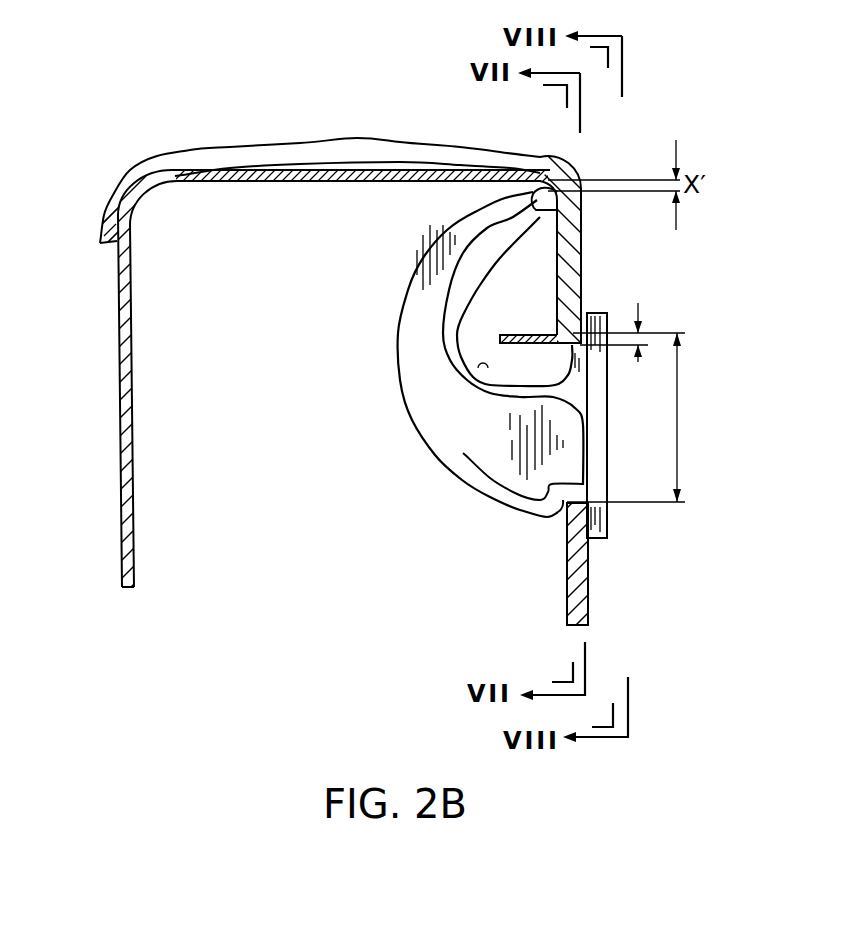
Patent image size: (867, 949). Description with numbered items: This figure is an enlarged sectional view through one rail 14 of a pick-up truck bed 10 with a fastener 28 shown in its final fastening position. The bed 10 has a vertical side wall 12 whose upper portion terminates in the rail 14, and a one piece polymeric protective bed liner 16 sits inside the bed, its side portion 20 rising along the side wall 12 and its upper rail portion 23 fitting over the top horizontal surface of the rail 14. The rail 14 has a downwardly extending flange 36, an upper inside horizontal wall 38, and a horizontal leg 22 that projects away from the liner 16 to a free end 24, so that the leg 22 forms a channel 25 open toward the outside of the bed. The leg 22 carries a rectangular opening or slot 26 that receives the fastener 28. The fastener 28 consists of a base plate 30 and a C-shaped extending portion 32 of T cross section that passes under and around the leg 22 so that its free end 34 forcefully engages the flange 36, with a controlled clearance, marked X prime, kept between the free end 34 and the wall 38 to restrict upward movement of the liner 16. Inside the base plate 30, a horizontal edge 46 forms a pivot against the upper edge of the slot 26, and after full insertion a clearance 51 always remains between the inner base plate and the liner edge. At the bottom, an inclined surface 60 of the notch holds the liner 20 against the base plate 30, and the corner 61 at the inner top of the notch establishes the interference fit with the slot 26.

The bed 10 is at (323, 387).
The side walls 12 is at (119, 535).
The rail 14 is at (117, 312).
The protective bed liner 16 is at (317, 177).
The side portions 20 is at (588, 582).
The horizontal leg 22 is at (548, 325).
The upper rail portions 23 is at (232, 158).
The free end 24 is at (500, 334).
The channel 25 is at (268, 298).
The opening or slot 26 is at (680, 420).
The fastener 28 is at (442, 473).
The base plate 30 is at (607, 422).
The extending portion 32 is at (412, 262).
The free end 34 is at (530, 192).
The flange 36 is at (556, 296).
The upper inside horizontal wall 38 is at (307, 183).
The horizontal edge 46 is at (568, 342).
The clearance 51 is at (642, 328).
The inclined surface 60 is at (556, 508).
The corner 61 is at (562, 515).